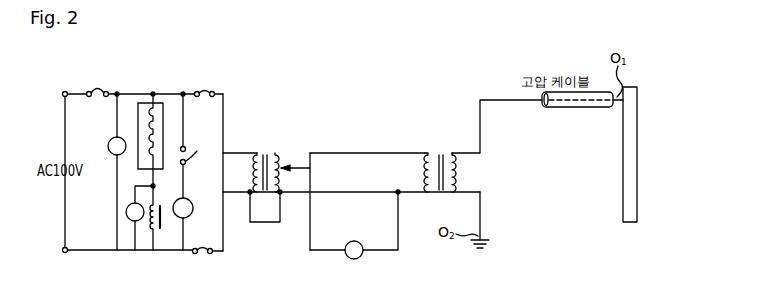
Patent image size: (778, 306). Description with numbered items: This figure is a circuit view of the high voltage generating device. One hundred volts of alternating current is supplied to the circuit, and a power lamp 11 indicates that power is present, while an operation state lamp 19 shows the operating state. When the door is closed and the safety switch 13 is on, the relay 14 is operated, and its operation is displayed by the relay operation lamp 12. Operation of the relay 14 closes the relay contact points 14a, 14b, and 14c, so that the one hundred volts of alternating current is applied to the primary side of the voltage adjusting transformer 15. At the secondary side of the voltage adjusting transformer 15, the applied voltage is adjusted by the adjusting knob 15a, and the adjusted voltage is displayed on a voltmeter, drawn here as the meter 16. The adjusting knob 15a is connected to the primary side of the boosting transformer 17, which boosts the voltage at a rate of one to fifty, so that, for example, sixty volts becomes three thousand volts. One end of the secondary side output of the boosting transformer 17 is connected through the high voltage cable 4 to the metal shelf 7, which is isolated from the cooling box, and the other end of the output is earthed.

The power lamp 11 is at (107, 147).
The relay operation lamp 12 is at (125, 213).
The safety switch 13 is at (163, 105).
The relay 14 is at (160, 229).
The relay contact point 14a is at (204, 91).
The relay contact point 14b is at (189, 162).
The relay contact point 14c is at (199, 254).
The voltage adjusting transformer 15 is at (268, 149).
The adjusting knob 15a is at (305, 167).
The voltmeter 16 is at (355, 238).
The boosting transformer 17 is at (440, 128).
The operation state lamp 19 is at (190, 206).
The high voltage cable 4 is at (578, 108).
The metal shelf 7 is at (637, 150).